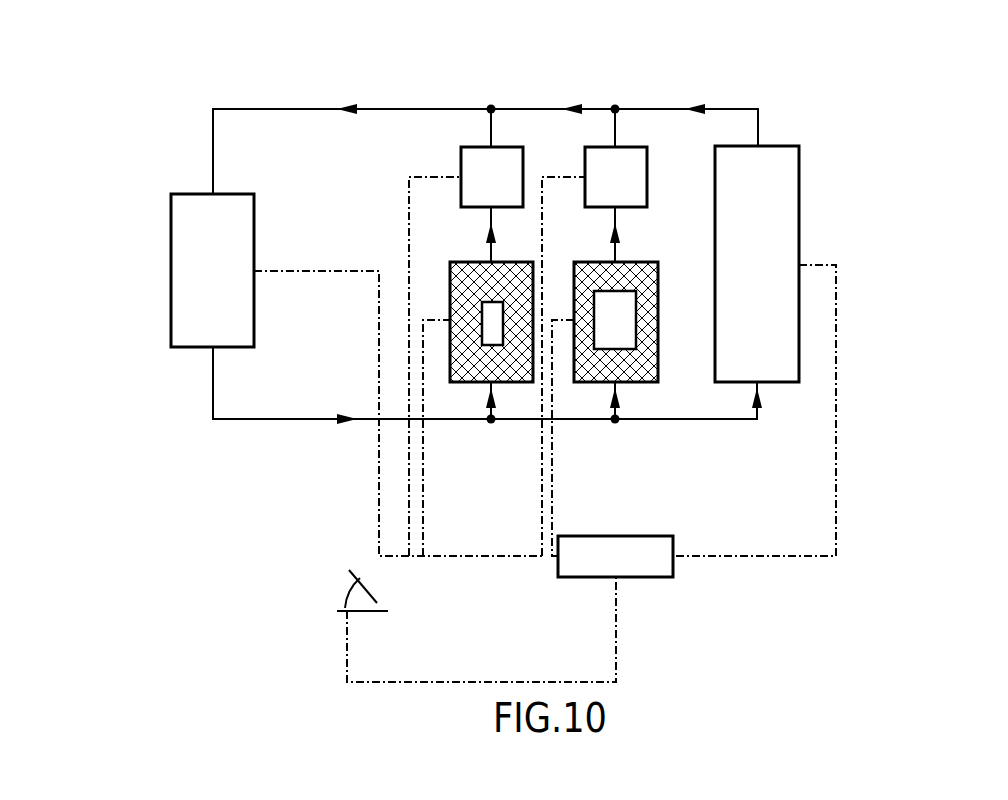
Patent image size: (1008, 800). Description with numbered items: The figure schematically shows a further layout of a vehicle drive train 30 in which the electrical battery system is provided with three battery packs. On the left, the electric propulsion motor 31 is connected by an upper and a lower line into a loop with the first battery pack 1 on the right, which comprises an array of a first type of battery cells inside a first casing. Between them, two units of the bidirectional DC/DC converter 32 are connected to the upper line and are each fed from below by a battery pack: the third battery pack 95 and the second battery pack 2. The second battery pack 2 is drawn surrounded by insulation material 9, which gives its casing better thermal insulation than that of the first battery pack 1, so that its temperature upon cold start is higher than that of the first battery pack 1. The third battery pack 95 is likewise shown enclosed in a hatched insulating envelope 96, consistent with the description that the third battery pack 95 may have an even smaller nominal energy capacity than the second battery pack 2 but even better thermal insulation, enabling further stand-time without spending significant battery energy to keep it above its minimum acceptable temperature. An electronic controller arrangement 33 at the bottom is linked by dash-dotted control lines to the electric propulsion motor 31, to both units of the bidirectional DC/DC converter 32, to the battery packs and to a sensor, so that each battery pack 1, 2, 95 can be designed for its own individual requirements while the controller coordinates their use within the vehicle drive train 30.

The vehicle drive train 30 is at (146, 51).
The electric propulsion motor 31 is at (171, 245).
The bidirectional DC/DC converter 32 is at (502, 177).
The first battery pack 1 is at (759, 188).
The insulation of first storage 96 is at (463, 362).
The third battery pack 95 is at (497, 320).
The insulation material 9 is at (647, 320).
The second battery pack 2 is at (619, 317).
The electronic controller arrangement 33 is at (650, 577).